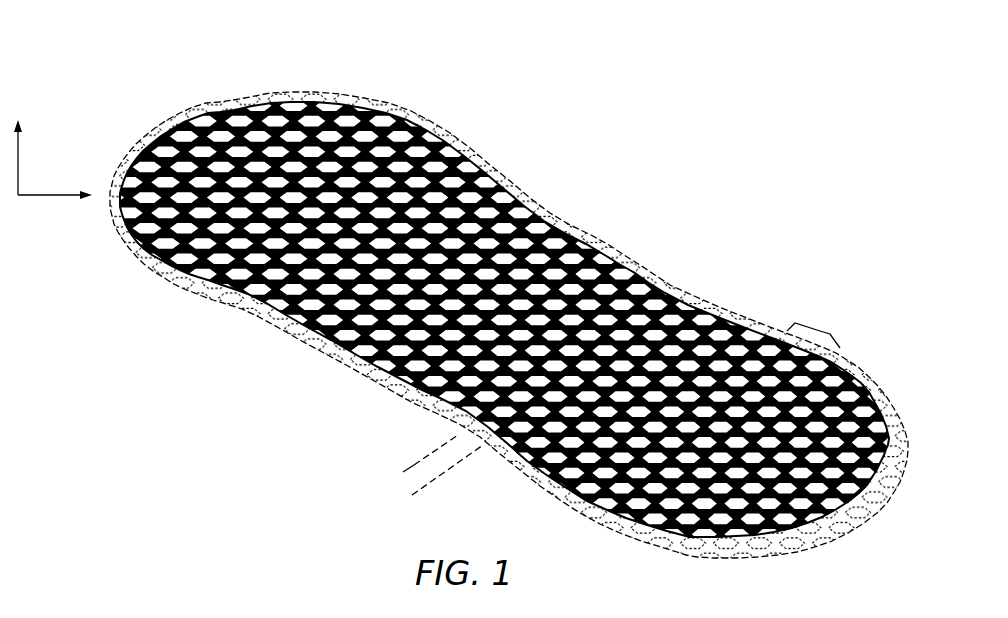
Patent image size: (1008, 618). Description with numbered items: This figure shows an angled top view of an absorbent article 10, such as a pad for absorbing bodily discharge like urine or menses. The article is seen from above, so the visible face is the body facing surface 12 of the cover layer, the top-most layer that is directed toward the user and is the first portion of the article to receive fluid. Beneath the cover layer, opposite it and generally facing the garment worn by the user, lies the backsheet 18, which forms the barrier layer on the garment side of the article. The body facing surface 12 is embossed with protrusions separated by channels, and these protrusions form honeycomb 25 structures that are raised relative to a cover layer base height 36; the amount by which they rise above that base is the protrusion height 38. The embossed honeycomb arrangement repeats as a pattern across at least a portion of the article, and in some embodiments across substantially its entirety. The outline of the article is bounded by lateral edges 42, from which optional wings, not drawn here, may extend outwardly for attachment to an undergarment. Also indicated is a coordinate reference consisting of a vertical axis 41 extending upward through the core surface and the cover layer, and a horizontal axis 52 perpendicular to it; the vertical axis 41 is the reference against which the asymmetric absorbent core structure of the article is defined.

The absorbent article 10 is at (578, 63).
The body facing surface 12 is at (315, 115).
The backsheet 18 is at (185, 295).
The honeycomb 25 is at (816, 324).
The cover layer base height 36 is at (408, 470).
The protrusion height 38 is at (462, 535).
The vertical axis 41 is at (18, 162).
The lateral edges 42 is at (536, 200).
The horizontal axis 52 is at (42, 197).